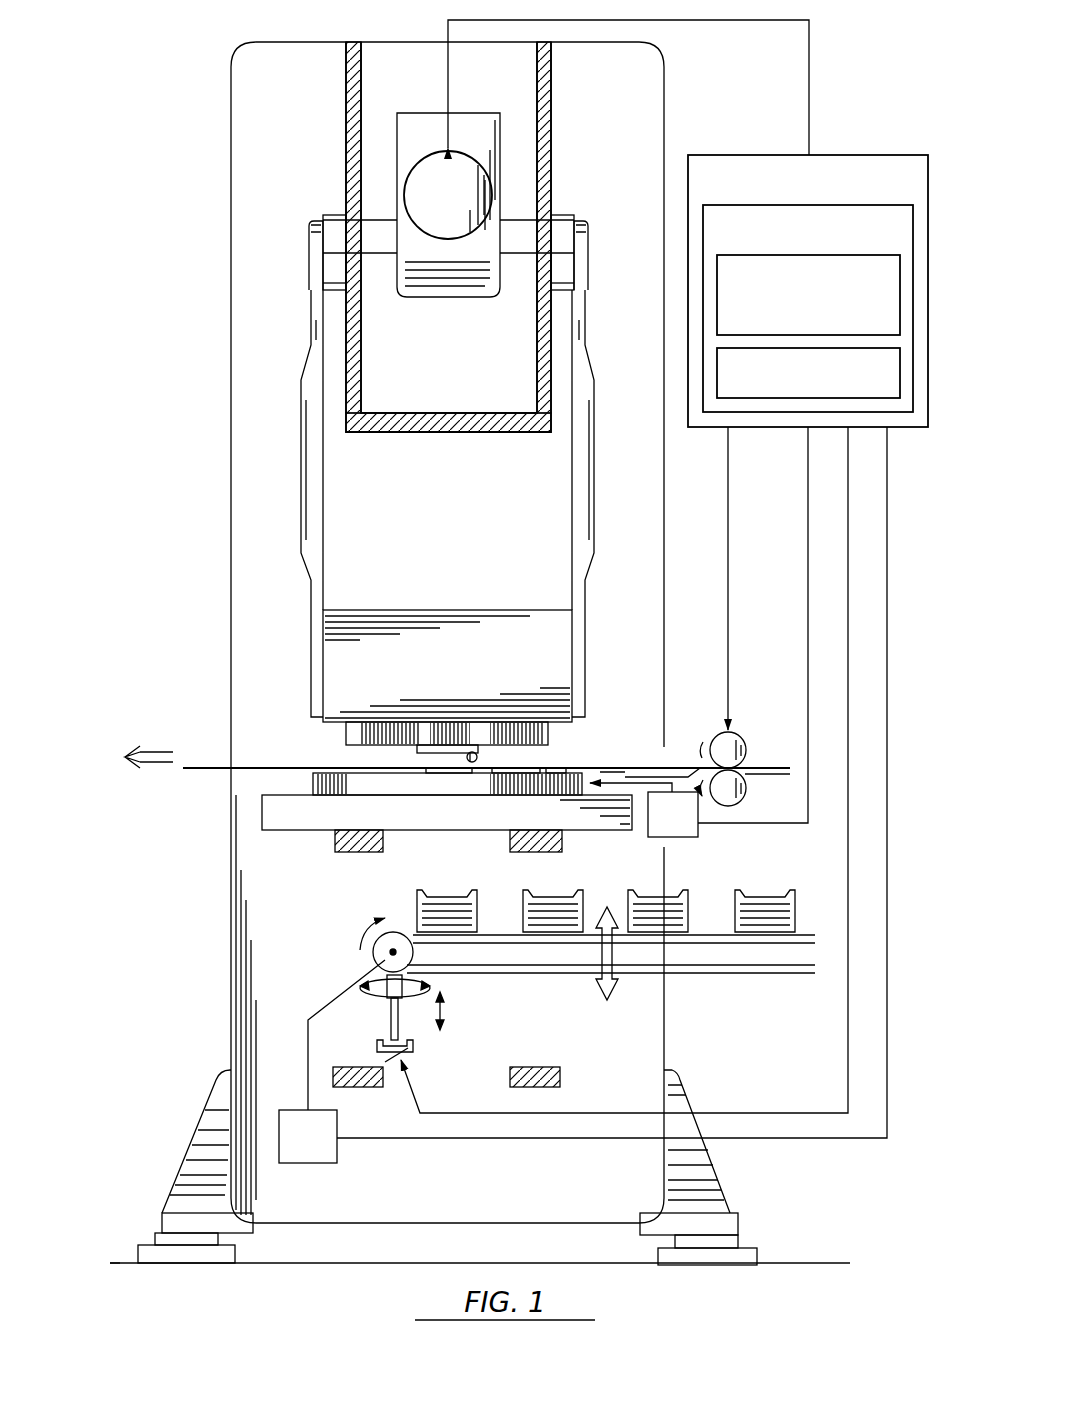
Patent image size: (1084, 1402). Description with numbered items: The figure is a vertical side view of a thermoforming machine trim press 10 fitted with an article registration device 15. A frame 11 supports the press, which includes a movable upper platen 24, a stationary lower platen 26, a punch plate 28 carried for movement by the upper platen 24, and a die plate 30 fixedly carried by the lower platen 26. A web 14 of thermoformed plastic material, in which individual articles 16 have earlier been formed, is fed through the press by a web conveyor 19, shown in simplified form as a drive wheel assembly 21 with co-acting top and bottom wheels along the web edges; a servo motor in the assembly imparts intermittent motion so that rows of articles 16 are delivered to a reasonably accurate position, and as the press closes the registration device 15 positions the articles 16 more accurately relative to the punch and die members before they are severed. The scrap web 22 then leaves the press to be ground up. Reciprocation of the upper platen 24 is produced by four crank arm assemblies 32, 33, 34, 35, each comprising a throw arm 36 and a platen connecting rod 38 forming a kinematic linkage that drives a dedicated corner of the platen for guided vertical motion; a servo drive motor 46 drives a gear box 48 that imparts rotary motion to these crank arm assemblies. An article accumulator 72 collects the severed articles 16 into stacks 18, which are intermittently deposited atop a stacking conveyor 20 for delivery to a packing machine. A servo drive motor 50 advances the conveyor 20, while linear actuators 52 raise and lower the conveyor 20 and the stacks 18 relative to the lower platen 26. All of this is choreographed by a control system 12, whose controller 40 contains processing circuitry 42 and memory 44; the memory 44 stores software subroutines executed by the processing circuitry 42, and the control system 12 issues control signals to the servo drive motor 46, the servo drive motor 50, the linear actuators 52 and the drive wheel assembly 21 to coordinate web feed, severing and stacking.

The thermoforming machine trim press 10 is at (191, 100).
The frame 11 is at (231, 405).
The control system 12 is at (862, 155).
The web 14 is at (766, 763).
The article registration device 15 is at (490, 762).
The articles 16 is at (640, 777).
The stacks 18 is at (441, 884).
The web conveyor 19 is at (751, 717).
The stacking conveyor 20 is at (338, 925).
The drive wheel assembly 21 is at (708, 736).
The scrap web 22 is at (205, 752).
The movable upper platen 24 is at (445, 610).
The stationary lower platen 26 is at (294, 840).
The punch plate 28 is at (346, 735).
The die plate 30 is at (313, 781).
The crank arm assembly 32 is at (297, 253).
The crank arm assembly 33 is at (316, 228).
The crank arm assembly 34 is at (600, 253).
The crank arm assembly 35 is at (581, 228).
The throw arm 36 is at (342, 215).
The platen connecting rod 38 is at (300, 460).
The controller 40 is at (913, 238).
The processing circuitry 42 is at (900, 295).
The memory 44 is at (770, 400).
The servo drive motor 46 is at (464, 208).
The gear box 48 is at (428, 113).
The servo drive motor 50 is at (322, 1150).
The linear actuators 52 is at (372, 1003).
The article accumulator 72 is at (686, 828).